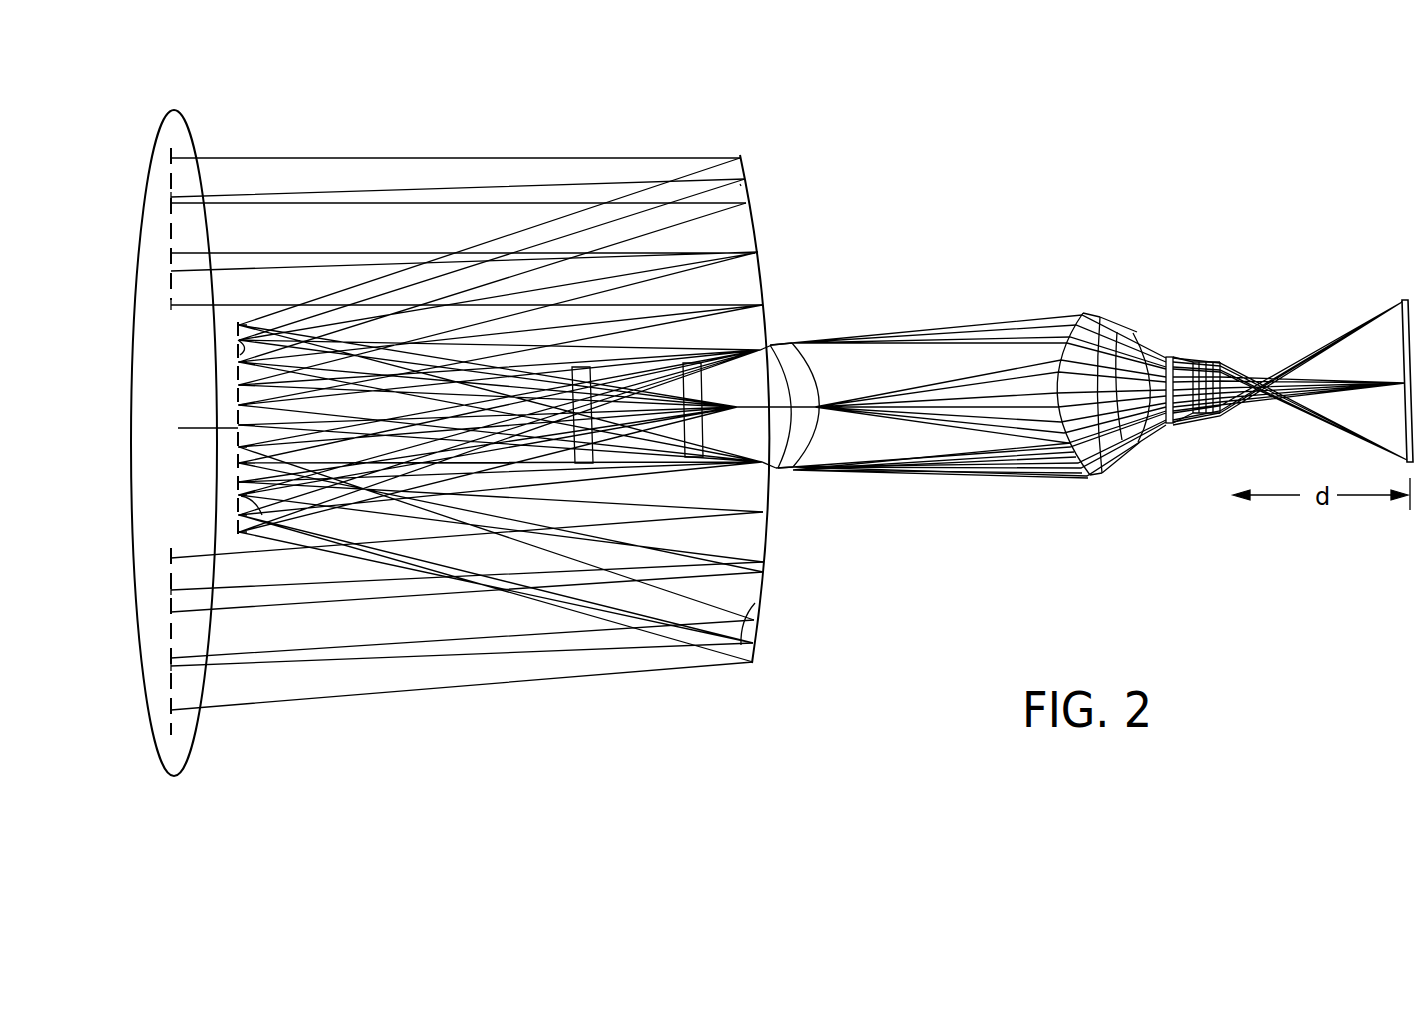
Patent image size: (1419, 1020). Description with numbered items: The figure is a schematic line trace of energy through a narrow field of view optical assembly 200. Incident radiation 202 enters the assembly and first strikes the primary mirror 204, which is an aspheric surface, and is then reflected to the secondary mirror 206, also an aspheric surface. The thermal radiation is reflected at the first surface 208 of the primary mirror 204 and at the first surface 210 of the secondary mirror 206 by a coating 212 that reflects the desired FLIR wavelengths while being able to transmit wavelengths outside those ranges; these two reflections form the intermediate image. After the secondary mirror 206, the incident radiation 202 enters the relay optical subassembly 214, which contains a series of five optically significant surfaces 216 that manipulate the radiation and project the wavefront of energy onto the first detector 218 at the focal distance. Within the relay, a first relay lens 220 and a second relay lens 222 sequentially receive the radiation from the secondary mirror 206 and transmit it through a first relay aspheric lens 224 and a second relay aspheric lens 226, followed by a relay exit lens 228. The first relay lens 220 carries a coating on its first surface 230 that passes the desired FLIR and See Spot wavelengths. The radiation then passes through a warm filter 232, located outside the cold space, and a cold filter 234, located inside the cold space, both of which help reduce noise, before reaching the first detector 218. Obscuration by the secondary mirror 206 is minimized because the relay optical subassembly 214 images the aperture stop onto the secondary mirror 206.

The narrow field of view optical assembly 200 is at (1004, 198).
The incident radiation 202 is at (147, 176).
The primary mirror 204 is at (740, 157).
The secondary mirror 206 is at (237, 462).
The first surface of the primary mirror 208 is at (740, 184).
The first surface of the secondary mirror 210 is at (235, 338).
The coating 212 is at (757, 603).
The relay optical subassembly 214 is at (921, 505).
The optically significant surfaces 216 is at (800, 326).
The first detector 218 is at (1412, 338).
The first relay lens 220 is at (590, 367).
The second relay lens 222 is at (693, 362).
The first relay aspheric lens 224 is at (788, 452).
The second relay aspheric lens 226 is at (1090, 317).
The relay exit lens 228 is at (1137, 442).
The first surface of the first relay lens 230 is at (568, 373).
The warm filter 232 is at (1183, 360).
The cold filter 234 is at (1218, 405).